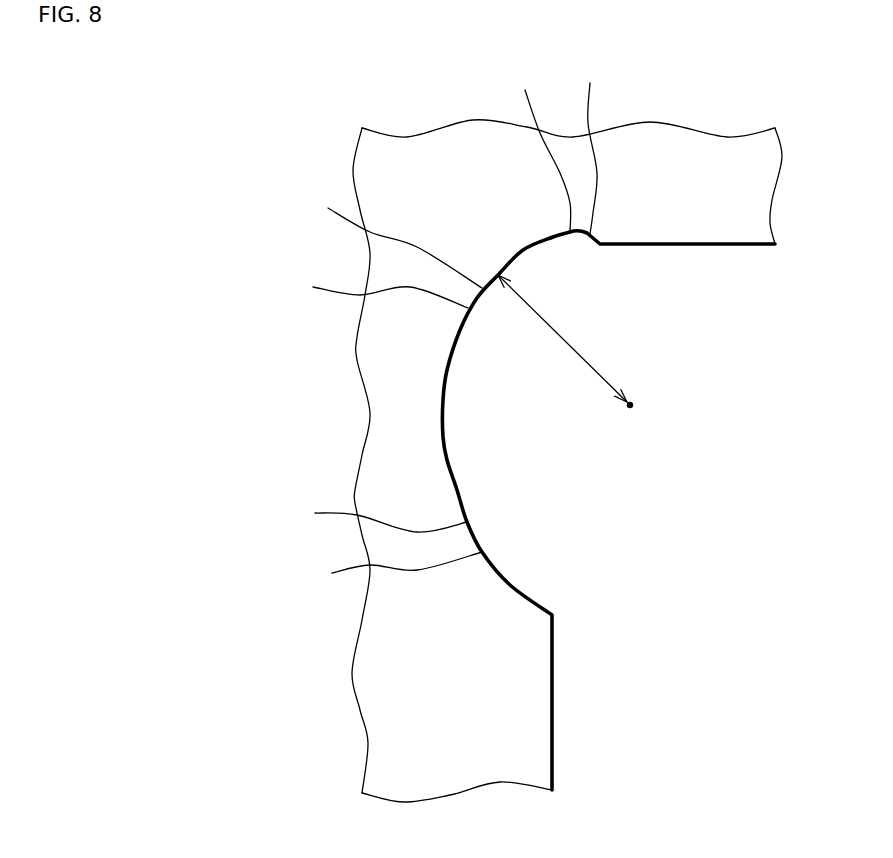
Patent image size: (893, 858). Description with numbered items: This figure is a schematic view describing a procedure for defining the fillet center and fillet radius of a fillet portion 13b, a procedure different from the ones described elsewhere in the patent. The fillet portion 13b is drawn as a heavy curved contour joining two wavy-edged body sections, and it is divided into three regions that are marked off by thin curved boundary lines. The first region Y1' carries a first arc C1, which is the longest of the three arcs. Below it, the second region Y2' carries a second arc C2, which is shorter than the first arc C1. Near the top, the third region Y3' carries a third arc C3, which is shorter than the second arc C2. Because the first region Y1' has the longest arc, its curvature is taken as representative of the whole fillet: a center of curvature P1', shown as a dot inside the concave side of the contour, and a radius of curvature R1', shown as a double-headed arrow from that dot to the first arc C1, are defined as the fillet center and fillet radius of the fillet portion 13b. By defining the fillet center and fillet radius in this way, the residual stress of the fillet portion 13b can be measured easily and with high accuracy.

The fillet portion 13b is at (447, 383).
The first arc C1 is at (389, 236).
The second arc C2 is at (389, 572).
The third arc C3 is at (539, 144).
The first region Y1' is at (368, 288).
The second region Y2' is at (368, 518).
The third region Y3' is at (597, 144).
The radius of curvature R1' is at (562, 338).
The center of curvature P1' is at (687, 388).